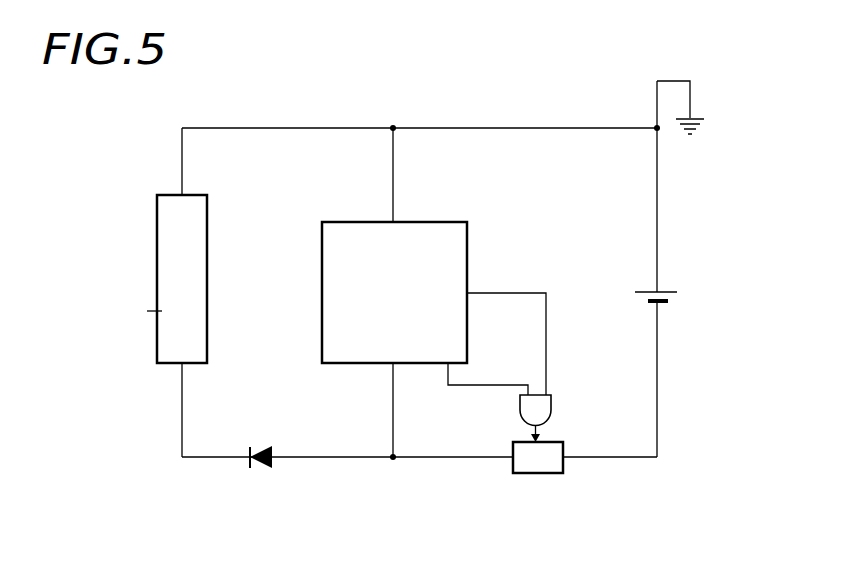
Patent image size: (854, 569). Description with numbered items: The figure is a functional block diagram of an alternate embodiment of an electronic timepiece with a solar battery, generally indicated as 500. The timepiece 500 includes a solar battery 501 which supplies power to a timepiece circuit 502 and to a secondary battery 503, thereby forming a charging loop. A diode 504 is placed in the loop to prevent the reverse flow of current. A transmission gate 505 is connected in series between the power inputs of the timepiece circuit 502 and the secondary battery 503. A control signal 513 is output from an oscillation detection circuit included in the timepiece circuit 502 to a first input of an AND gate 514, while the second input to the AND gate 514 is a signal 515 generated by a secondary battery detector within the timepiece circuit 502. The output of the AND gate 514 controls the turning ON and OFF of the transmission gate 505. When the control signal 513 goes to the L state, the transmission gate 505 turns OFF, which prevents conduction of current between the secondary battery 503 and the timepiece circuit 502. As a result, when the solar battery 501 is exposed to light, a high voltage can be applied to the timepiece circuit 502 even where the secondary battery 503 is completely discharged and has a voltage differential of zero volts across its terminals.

The electronic timepiece with a solar battery 500 is at (424, 491).
The solar battery 501 is at (194, 277).
The timepiece circuit 502 is at (334, 225).
The secondary battery 503 is at (670, 297).
The diode 504 is at (261, 470).
The transmission gate 505 is at (538, 475).
The control signal 513 is at (528, 292).
The AND gate 514 is at (549, 412).
The signal 515 is at (482, 386).